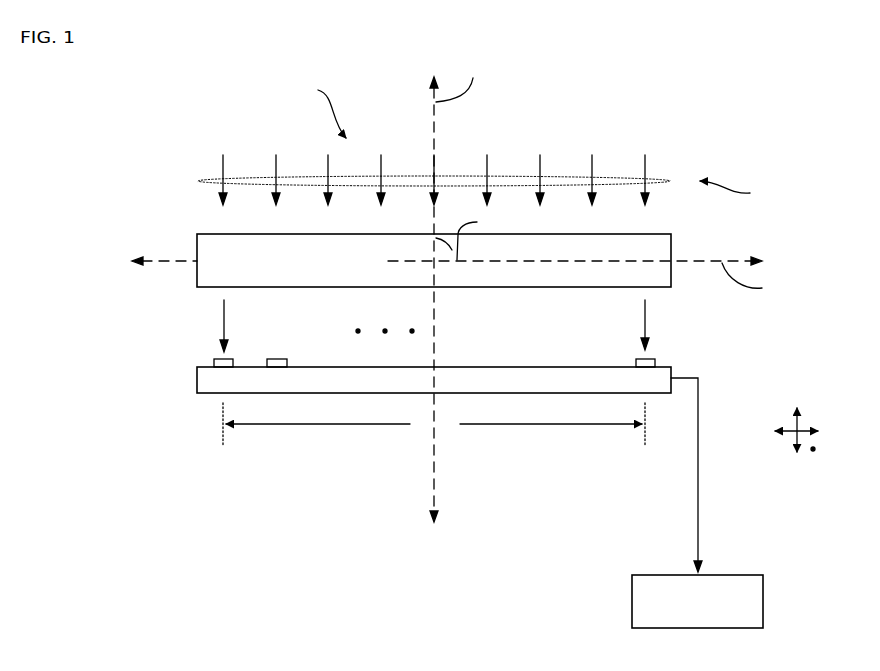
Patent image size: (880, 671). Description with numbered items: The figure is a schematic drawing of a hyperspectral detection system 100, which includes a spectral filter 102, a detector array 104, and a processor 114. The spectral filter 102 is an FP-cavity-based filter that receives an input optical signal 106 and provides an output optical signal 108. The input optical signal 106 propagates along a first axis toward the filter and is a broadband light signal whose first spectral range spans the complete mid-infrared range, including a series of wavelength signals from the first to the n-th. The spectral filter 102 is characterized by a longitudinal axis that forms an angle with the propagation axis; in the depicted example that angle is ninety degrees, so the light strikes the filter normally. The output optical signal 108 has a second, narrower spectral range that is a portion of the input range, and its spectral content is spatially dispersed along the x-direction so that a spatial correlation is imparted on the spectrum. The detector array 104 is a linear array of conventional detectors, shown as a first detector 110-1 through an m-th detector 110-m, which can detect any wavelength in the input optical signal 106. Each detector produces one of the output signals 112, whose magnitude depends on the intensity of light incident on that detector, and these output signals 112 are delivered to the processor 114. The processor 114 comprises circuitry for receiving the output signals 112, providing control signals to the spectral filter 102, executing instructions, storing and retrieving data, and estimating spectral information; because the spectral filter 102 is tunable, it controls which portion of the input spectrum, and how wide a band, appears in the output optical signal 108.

The hyperspectral detection system 100 is at (104, 202).
The spectral filter 102 is at (341, 270).
The detector array 104 is at (347, 386).
The input optical signal 106 is at (697, 128).
The output optical signal 108 is at (675, 335).
The detector 110-1 is at (215, 362).
The detector 110-m is at (634, 362).
The output signals 112 is at (693, 497).
The processor 114 is at (752, 612).